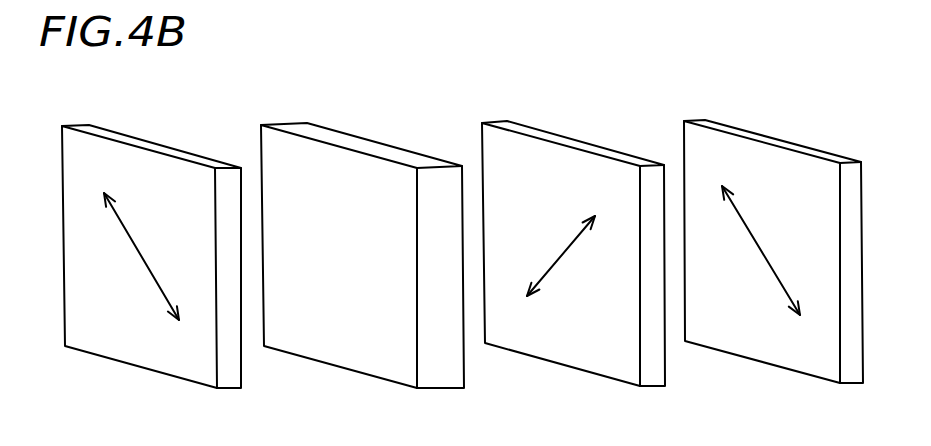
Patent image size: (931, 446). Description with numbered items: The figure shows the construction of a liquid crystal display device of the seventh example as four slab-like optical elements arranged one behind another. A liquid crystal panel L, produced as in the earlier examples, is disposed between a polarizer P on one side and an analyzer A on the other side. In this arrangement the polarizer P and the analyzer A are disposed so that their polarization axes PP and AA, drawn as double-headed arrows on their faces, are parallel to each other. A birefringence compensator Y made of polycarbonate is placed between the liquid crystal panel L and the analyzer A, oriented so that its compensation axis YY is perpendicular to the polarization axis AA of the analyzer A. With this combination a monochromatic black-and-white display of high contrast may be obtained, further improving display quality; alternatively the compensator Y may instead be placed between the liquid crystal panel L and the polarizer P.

The polarizer P is at (151, 240).
The polarization axis of the polarizer PP is at (141, 256).
The liquid crystal panel L is at (362, 240).
The birefringence compensator Y is at (573, 239).
The compensation axis of the compensator YY is at (566, 256).
The analyzer A is at (773, 236).
The polarization axis of the analyzer AA is at (761, 250).